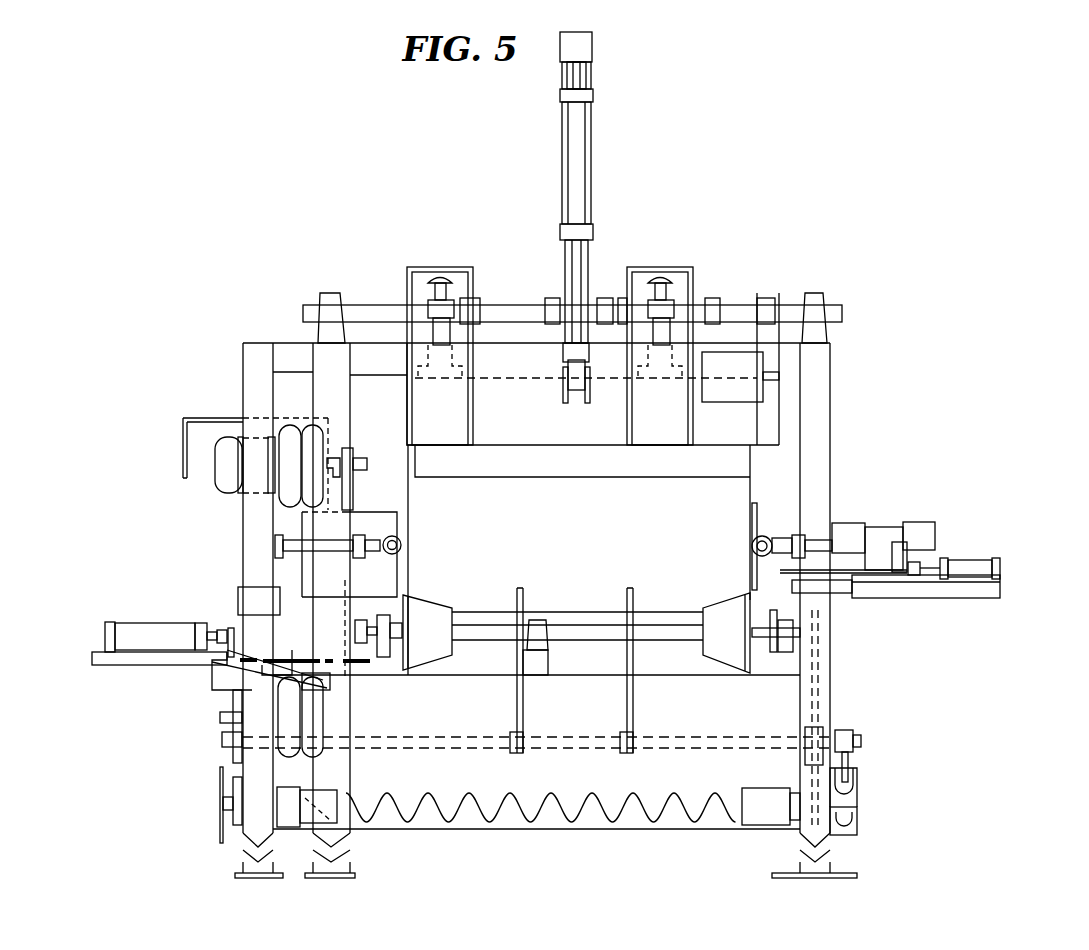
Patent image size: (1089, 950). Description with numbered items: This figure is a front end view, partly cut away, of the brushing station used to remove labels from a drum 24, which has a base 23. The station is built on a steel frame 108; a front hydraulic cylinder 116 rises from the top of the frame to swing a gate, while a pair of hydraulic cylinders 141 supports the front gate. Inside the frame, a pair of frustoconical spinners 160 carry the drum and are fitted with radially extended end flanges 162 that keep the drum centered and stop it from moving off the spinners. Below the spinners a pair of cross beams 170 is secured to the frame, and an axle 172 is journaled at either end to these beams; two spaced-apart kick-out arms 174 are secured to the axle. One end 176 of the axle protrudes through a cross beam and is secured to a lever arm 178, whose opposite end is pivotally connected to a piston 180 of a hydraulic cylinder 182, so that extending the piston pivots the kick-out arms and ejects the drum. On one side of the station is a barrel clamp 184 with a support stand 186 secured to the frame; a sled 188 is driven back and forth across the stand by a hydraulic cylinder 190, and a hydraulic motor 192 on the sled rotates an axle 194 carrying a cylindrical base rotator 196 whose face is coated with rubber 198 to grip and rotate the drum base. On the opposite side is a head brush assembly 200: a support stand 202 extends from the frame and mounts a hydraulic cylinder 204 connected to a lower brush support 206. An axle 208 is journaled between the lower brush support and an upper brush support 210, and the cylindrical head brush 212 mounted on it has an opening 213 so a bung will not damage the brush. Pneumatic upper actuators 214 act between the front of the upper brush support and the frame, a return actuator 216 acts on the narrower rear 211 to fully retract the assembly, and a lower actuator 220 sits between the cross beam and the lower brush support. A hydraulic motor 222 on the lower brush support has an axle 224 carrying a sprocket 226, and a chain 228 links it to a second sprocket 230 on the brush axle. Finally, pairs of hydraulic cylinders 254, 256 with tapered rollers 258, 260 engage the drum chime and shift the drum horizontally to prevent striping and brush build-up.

The steel frame 108 is at (832, 348).
The front hydraulic cylinder 116 is at (577, 176).
The hydraulic cylinders 141 is at (662, 326).
The drum 24 is at (740, 487).
The drum base 23 is at (760, 503).
The opening 213 is at (375, 604).
The spinners 160 is at (715, 655).
The end flanges 162 is at (745, 678).
The kick-out arms 174 is at (517, 710).
The axle 172 is at (720, 747).
The barrel clamp 184 is at (946, 432).
The rubber 198 is at (750, 515).
The tapered rollers 260 is at (750, 560).
The base rotator 196 is at (753, 528).
The axle 194 is at (851, 525).
The hydraulic cylinders 256 is at (858, 542).
The hydraulic motor 192 is at (884, 536).
The sled 188 is at (852, 577).
The support stand 186 is at (997, 588).
The hydraulic cylinder 190 is at (970, 567).
The lever arm 178 is at (843, 730).
The end of the axle 176 is at (858, 740).
The piston 180 is at (849, 762).
The hydraulic cylinder 182 is at (852, 817).
The head brush assembly 200 is at (149, 579).
The hydraulic cylinder 204 is at (122, 628).
The support stand 202 is at (122, 664).
The hydraulic motor 222 is at (243, 595).
The lower brush support 206 is at (238, 628).
The axle 224 is at (248, 661).
The sprocket 226 is at (248, 664).
The chain 228 is at (302, 660).
The second sprocket 230 is at (361, 663).
The axle 208 is at (353, 680).
The cross beams 170 is at (243, 760).
The lower actuator 220 is at (290, 757).
The upper actuators 214 is at (290, 430).
The return actuator 216 is at (222, 490).
The upper brush support 210 is at (222, 418).
The rear 211 is at (183, 455).
The head brush 212 is at (318, 530).
The hydraulic cylinders 254 is at (335, 552).
The tapered rollers 258 is at (405, 535).